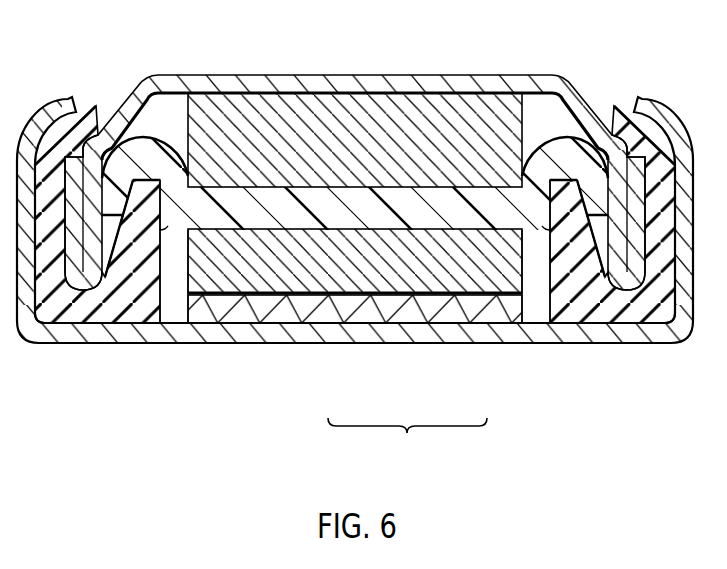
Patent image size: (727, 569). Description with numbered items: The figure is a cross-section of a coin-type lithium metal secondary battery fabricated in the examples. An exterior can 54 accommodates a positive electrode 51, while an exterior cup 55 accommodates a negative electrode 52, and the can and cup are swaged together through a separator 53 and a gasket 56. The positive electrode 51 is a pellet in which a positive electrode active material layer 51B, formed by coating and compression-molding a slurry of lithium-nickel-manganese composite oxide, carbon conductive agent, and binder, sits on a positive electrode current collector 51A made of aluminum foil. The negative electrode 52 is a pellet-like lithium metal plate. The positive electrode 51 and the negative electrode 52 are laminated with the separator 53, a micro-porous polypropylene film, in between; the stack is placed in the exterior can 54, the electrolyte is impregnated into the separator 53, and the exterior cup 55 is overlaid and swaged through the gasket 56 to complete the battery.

The positive electrode 51 is at (407, 442).
The positive electrode current collector 51A is at (353, 312).
The positive electrode active material layer 51B is at (465, 290).
The negative electrode 52 is at (345, 90).
The separator 53 is at (593, 157).
The exterior can 54 is at (233, 335).
The exterior cup 55 is at (188, 78).
The gasket 56 is at (125, 325).